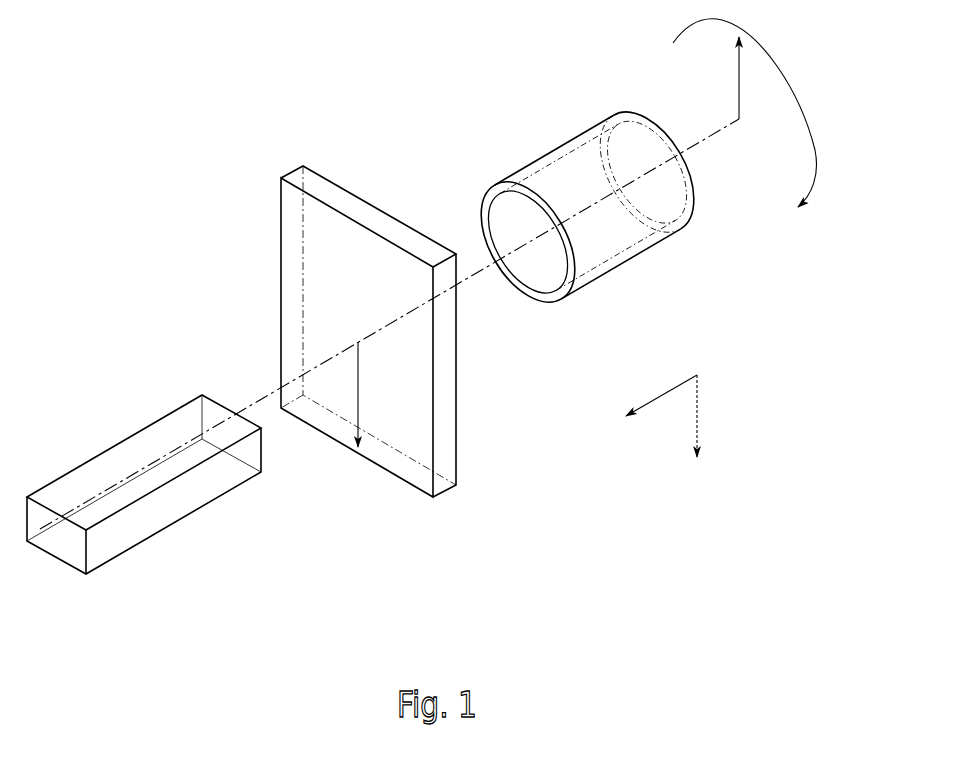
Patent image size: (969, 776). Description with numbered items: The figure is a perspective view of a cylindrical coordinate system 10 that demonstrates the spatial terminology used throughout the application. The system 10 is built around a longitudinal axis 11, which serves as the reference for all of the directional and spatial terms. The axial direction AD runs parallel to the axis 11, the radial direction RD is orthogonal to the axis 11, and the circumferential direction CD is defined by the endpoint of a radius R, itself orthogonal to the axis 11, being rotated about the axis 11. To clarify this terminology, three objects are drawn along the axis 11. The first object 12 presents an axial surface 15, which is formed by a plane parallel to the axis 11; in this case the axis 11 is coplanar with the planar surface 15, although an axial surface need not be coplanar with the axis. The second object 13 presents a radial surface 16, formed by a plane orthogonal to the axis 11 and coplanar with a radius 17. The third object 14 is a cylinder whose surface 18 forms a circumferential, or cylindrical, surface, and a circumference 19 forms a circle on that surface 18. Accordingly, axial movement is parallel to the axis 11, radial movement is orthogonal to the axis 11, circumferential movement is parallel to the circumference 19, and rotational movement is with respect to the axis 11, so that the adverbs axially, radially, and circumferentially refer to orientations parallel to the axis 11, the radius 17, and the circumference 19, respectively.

The cylindrical coordinate system 10 is at (237, 213).
The longitudinal axis 11 is at (680, 153).
The object 12 is at (144, 513).
The object 13 is at (364, 352).
The object 14 is at (554, 219).
The axial surface 15 is at (107, 467).
The radial surface 16 is at (295, 290).
The radius 17 is at (358, 390).
The circumferential surface 18 is at (604, 197).
The circumference 19 is at (555, 150).
The radius R is at (739, 72).
The circumferential direction CD is at (777, 63).
The axial direction AD is at (660, 393).
The radial direction RD is at (697, 412).